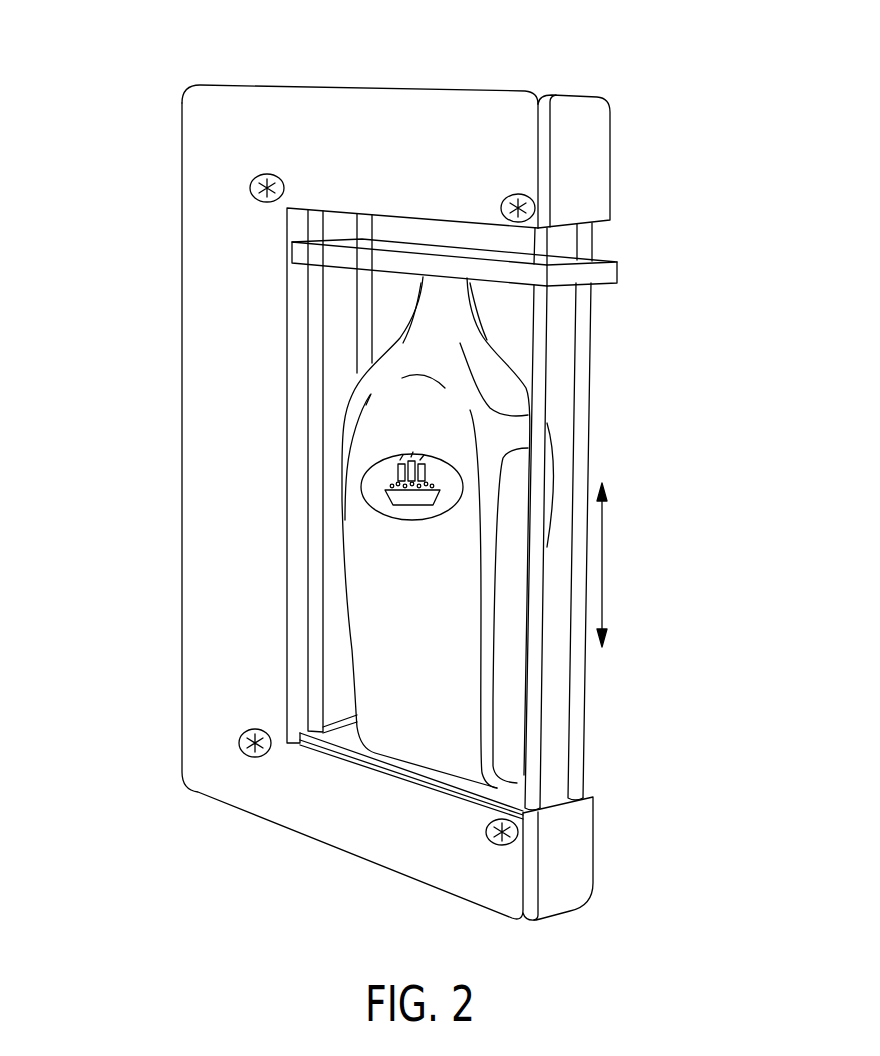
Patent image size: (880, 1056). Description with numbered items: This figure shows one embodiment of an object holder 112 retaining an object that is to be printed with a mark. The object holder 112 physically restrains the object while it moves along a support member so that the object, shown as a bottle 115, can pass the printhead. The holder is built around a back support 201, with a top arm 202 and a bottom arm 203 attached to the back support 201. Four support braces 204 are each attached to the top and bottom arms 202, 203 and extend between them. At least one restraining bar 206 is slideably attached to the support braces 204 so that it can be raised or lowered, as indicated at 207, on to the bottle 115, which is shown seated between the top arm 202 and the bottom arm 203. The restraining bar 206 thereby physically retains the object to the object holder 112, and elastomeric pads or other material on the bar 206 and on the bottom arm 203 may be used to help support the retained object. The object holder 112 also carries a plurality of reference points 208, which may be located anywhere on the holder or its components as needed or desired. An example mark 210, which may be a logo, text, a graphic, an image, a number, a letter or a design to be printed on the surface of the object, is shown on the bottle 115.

The object holder 112 is at (490, 88).
The back support 201 is at (152, 498).
The top arm 202 is at (638, 166).
The bottom arm 203 is at (324, 817).
The support braces 204 is at (357, 322).
The restraining bar 206 is at (398, 258).
The raising or lowering of the restraining bar 207 is at (604, 557).
The reference points 208 is at (253, 177).
The bottle 115 is at (517, 365).
The mark 210 is at (413, 520).